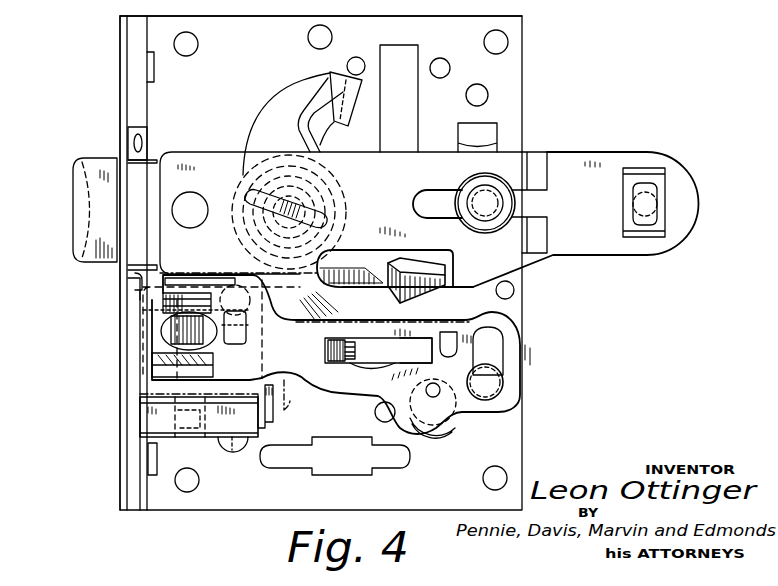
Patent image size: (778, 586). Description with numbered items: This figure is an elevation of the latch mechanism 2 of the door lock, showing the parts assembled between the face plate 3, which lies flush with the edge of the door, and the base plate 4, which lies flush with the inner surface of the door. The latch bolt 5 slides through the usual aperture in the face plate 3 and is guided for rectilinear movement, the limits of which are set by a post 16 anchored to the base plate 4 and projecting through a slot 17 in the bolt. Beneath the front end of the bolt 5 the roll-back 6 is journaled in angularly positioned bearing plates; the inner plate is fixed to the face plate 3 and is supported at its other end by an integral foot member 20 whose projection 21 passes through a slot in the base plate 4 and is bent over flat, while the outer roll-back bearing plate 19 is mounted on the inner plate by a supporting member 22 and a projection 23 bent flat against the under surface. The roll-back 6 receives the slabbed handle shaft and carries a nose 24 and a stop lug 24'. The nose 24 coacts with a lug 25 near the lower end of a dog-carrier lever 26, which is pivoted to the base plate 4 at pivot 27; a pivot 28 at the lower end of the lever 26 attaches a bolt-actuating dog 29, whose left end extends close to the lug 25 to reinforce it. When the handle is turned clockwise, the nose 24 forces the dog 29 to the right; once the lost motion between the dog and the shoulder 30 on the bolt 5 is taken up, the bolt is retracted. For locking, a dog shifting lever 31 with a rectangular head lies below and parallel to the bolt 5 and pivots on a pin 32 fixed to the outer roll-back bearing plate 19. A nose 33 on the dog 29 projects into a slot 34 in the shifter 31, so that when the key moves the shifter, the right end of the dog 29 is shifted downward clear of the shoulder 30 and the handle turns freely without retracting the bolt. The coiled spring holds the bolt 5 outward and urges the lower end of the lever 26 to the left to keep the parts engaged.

The latch mechanism 2 is at (535, 94).
The face plate 3 is at (122, 80).
The base plate 4 is at (263, 30).
The latch bolt 5 is at (78, 185).
The roll-back 6 is at (165, 326).
The post 16 is at (465, 192).
The slot 17 is at (420, 196).
The outer roll-back bearing plate 19 is at (150, 386).
The foot member 20 is at (270, 404).
The projection 21 is at (284, 400).
The supporting member 22 is at (145, 405).
The projection 23 is at (247, 460).
The nose 24 is at (160, 291).
The stop lug 24' is at (221, 455).
The lug 25 is at (200, 270).
The dog-carrier lever 26 is at (250, 137).
The pivot 27 is at (274, 152).
The pivot 28 is at (238, 274).
The bolt-actuating dog 29 is at (439, 298).
The shoulder 30 is at (455, 268).
The dog shifting lever 31 is at (365, 385).
The pin 32 is at (250, 333).
The nose 33 is at (355, 352).
The slot 34 is at (412, 351).